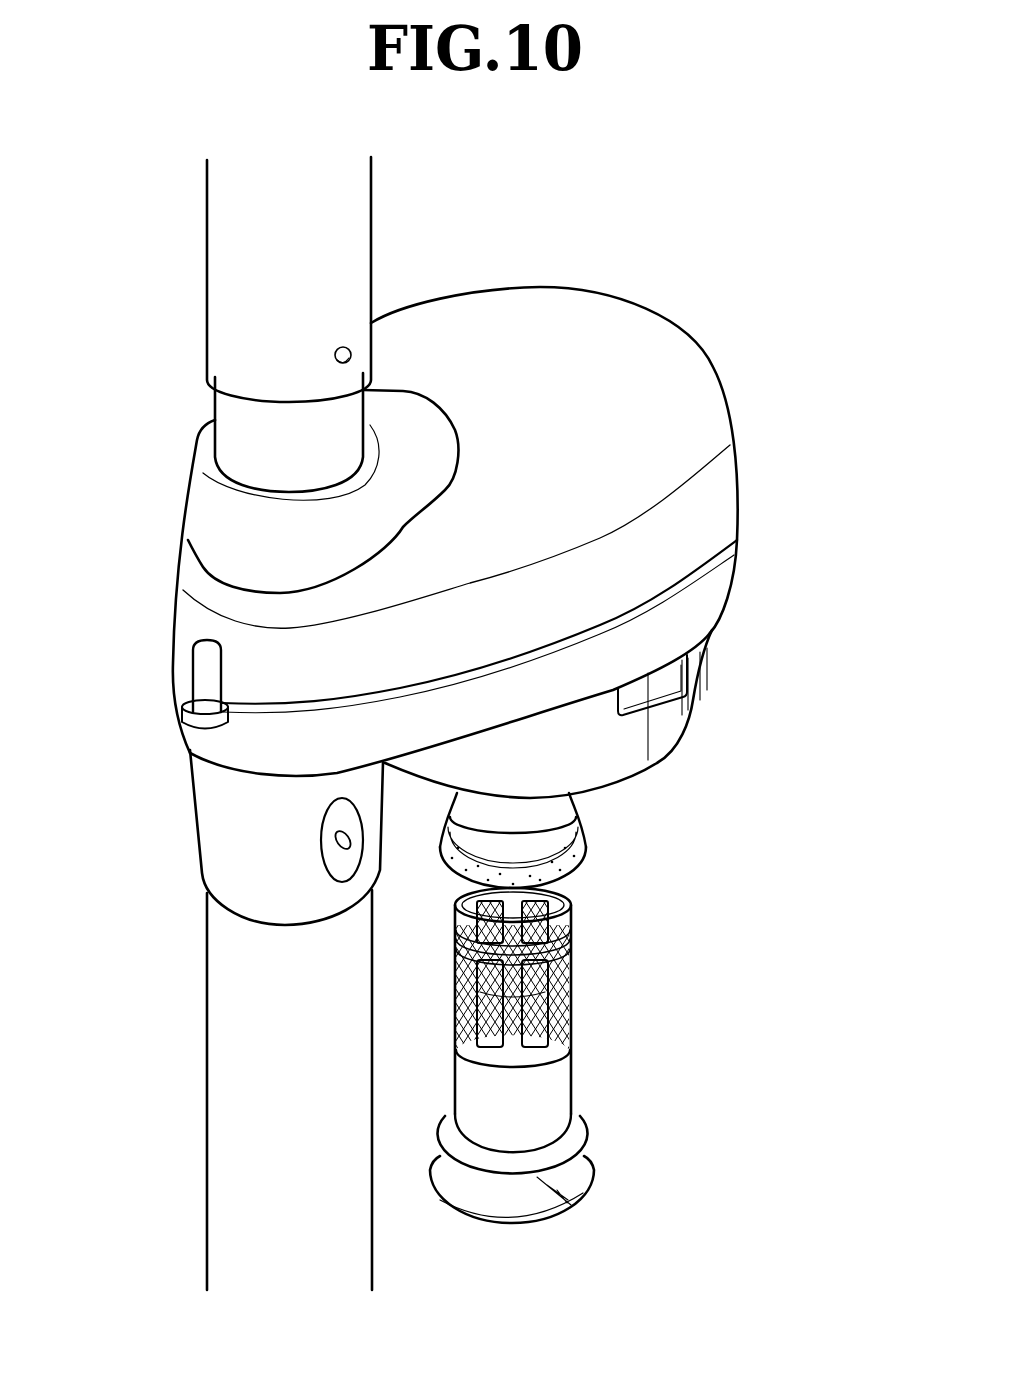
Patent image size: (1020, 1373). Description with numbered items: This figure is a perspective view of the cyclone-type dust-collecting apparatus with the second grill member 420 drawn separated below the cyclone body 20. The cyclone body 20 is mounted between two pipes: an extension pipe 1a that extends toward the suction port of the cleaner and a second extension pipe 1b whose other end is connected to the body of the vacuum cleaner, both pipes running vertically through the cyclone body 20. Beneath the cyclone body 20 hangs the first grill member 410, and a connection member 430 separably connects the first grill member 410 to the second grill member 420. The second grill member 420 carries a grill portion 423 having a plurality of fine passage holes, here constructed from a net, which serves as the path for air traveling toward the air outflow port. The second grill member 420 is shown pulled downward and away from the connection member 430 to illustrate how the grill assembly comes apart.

The extension pipe 1a is at (222, 1042).
The second extension pipe 1b is at (222, 272).
The cyclone body 20 is at (665, 345).
The first grill member 410 is at (545, 808).
The connection member 430 is at (563, 860).
The grill portion 423 is at (575, 977).
The second grill member 420 is at (558, 1092).